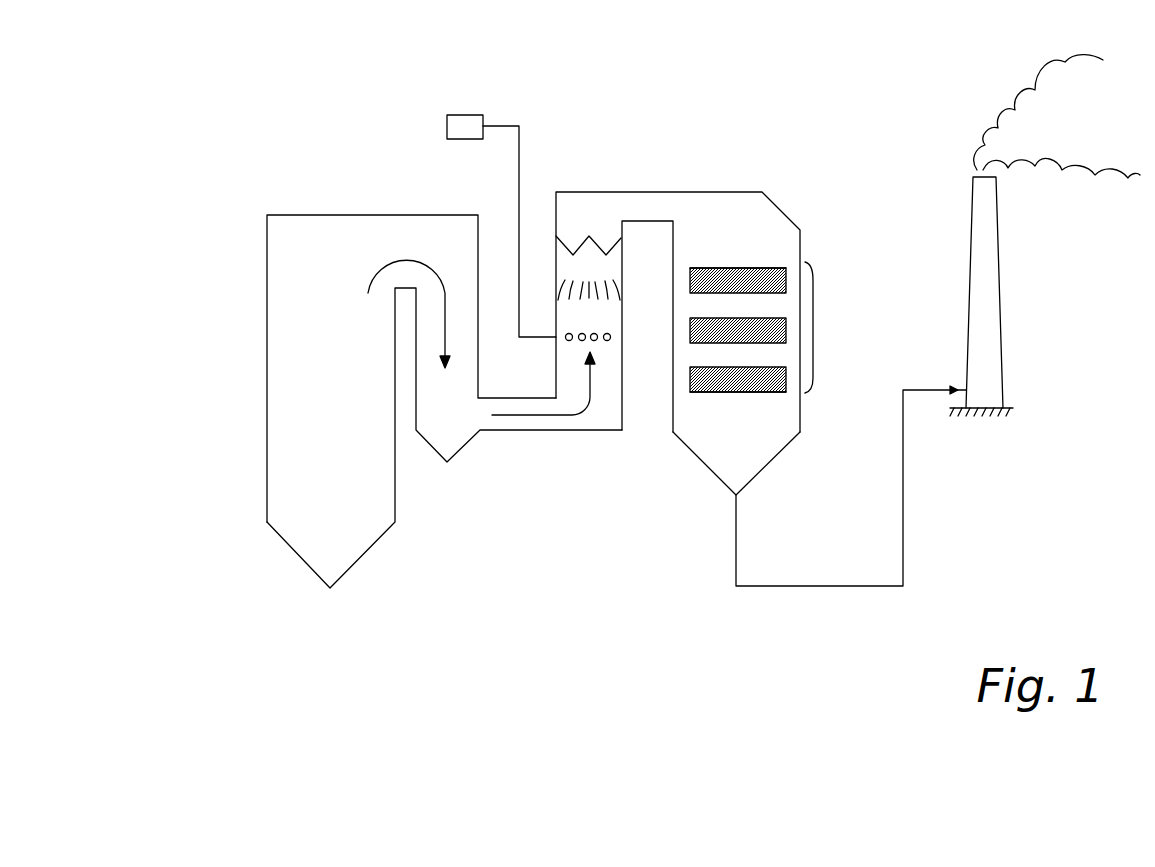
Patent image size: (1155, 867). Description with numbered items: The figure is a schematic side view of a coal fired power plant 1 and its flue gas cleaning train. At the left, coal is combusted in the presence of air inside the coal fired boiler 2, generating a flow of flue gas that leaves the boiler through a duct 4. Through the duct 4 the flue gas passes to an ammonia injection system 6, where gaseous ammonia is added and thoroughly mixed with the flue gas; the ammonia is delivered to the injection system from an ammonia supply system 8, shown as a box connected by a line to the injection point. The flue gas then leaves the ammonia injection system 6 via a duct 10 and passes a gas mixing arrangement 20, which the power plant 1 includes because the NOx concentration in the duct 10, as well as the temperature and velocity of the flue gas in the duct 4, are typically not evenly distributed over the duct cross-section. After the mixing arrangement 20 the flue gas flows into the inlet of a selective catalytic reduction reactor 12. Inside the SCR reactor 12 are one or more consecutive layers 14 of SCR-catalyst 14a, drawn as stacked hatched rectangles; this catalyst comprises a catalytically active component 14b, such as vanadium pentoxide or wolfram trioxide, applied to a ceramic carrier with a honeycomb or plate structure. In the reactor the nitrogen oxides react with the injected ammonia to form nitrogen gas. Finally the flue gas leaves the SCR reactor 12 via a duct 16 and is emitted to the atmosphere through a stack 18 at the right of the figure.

The power plant 1 is at (400, 163).
The coal fired boiler 2 is at (295, 302).
The duct 4 is at (530, 424).
The ammonia injection system 6 is at (603, 350).
The ammonia supply system 8 is at (465, 114).
The duct 10 is at (607, 267).
The selective catalytic reduction reactor 12 is at (750, 257).
The layers of SCR-catalyst 14 is at (813, 332).
The SCR-catalyst 14a is at (787, 283).
The catalytically active component 14b is at (760, 270).
The duct 16 is at (808, 586).
The stack 18 is at (1000, 297).
The gas mixing arrangement 20 is at (581, 220).